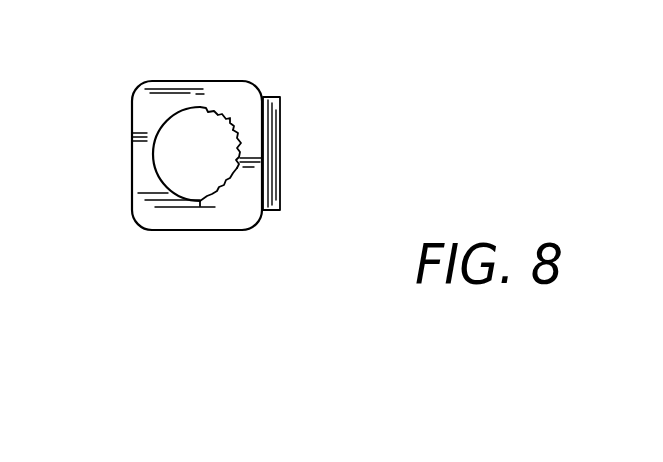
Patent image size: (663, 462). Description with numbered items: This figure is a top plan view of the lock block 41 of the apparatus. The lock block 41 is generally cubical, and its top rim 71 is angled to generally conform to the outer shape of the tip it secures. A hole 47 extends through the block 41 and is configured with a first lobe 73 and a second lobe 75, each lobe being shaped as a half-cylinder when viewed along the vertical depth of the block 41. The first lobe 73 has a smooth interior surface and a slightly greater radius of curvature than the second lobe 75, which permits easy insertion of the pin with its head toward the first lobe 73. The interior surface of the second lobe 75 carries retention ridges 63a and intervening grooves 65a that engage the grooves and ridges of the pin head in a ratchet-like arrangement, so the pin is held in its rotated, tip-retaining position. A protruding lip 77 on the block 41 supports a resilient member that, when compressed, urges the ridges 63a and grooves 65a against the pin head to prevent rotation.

The lock block 41 is at (86, 117).
The hole 47 is at (197, 198).
The retention ridges 63a is at (238, 133).
The grooves 65a is at (222, 118).
The top rim 71 is at (155, 90).
The first lobe 73 is at (150, 177).
The second lobe 75 is at (237, 168).
The protruding lip 77 is at (280, 162).